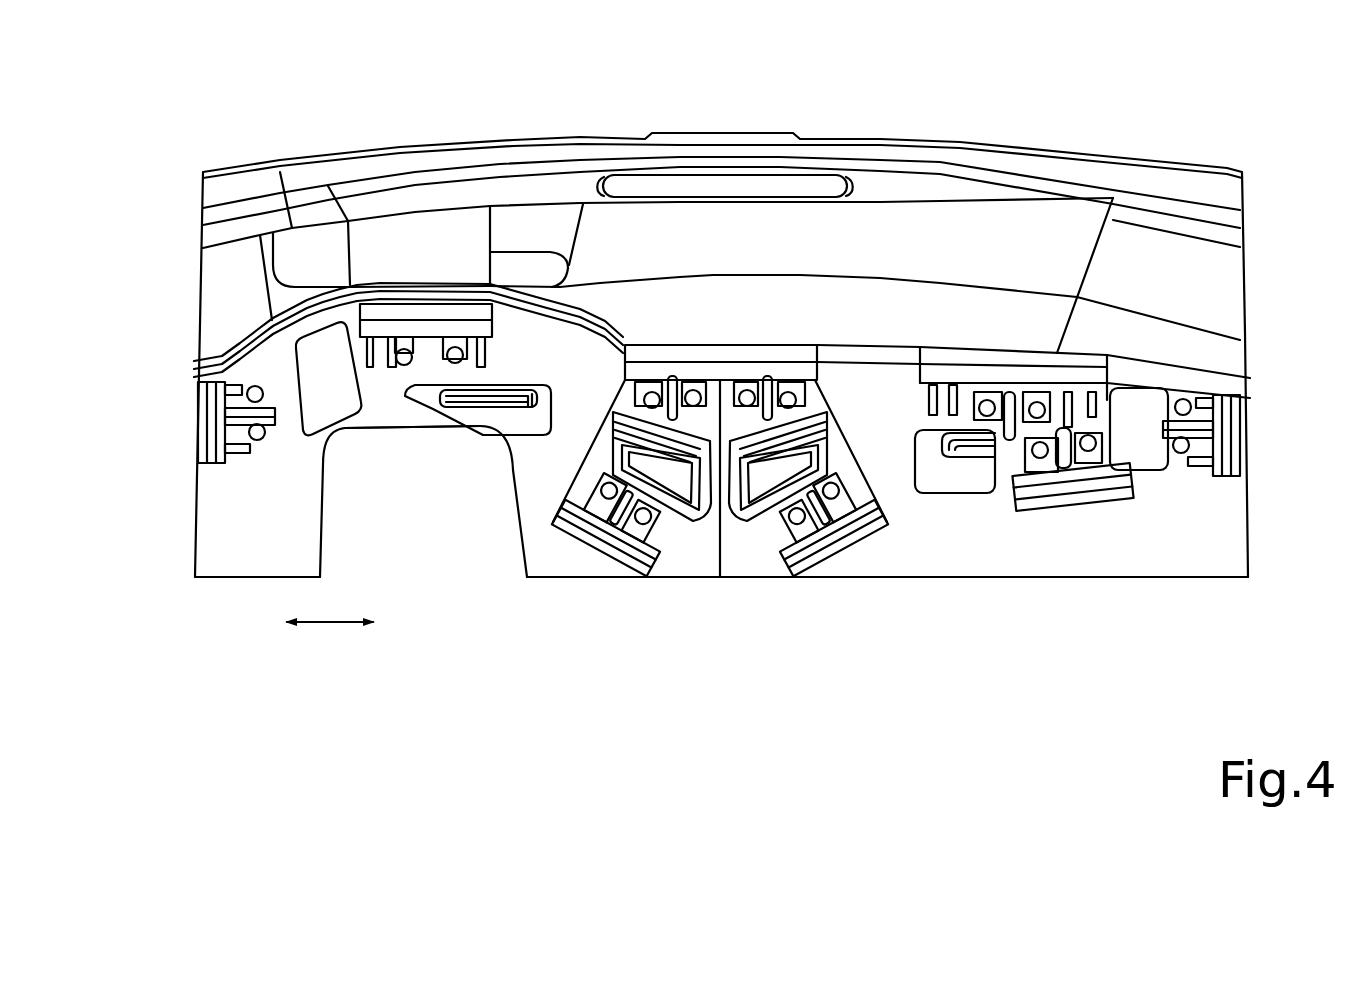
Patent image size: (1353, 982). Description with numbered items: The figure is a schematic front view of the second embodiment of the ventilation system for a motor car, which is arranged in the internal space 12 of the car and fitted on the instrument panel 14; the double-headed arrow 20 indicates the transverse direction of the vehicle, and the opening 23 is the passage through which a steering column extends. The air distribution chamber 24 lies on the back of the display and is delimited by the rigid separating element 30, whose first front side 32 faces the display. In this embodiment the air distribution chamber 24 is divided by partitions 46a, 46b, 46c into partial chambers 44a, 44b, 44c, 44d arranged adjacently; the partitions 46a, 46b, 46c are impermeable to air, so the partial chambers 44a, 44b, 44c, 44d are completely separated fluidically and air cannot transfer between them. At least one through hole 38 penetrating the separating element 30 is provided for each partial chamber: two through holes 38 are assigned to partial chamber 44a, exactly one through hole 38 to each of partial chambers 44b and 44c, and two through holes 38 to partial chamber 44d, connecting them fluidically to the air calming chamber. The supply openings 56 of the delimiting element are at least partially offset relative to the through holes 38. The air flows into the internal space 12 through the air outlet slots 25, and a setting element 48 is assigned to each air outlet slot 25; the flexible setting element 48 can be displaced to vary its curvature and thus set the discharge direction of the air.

The internal space 12 is at (1322, 345).
The instrument panel 14 is at (1172, 152).
The double-headed arrow 20 is at (333, 623).
The opening 23 is at (423, 480).
The air distribution chamber 24 is at (267, 490).
The air outlet slots 25 is at (194, 420).
The separating element 30 is at (833, 382).
The first front side 32 is at (1210, 548).
The through holes 38 is at (322, 367).
The partial chamber 44a is at (570, 358).
The partial chamber 44b is at (687, 543).
The partial chamber 44c is at (757, 545).
The partial chamber 44d is at (882, 383).
The partition 46a is at (623, 390).
The partition 46b is at (729, 547).
The partition 46c is at (836, 408).
The setting element 48 is at (198, 383).
The supply openings 56 is at (676, 481).